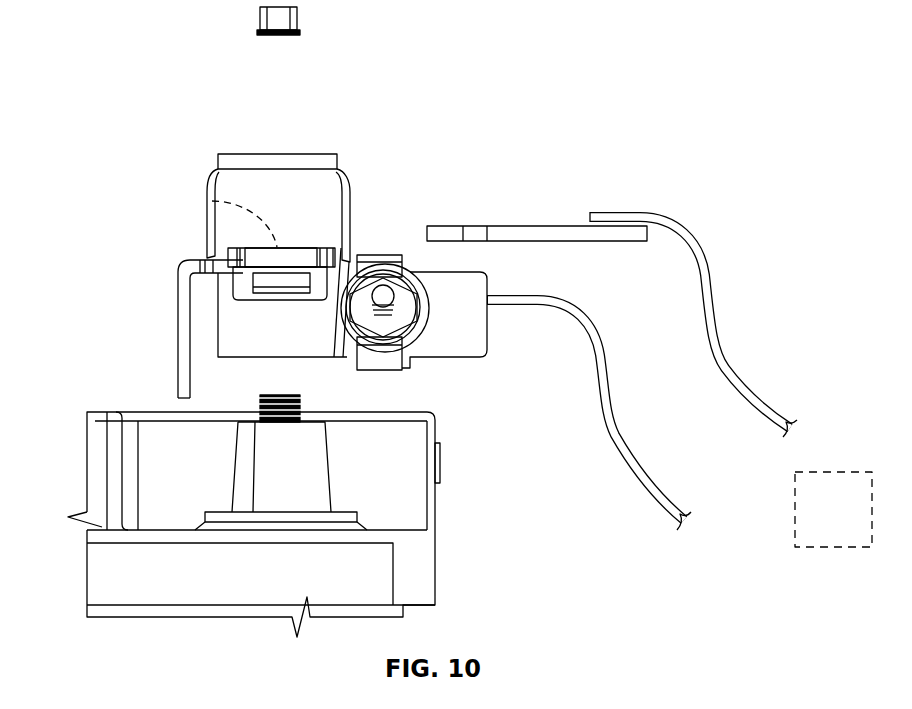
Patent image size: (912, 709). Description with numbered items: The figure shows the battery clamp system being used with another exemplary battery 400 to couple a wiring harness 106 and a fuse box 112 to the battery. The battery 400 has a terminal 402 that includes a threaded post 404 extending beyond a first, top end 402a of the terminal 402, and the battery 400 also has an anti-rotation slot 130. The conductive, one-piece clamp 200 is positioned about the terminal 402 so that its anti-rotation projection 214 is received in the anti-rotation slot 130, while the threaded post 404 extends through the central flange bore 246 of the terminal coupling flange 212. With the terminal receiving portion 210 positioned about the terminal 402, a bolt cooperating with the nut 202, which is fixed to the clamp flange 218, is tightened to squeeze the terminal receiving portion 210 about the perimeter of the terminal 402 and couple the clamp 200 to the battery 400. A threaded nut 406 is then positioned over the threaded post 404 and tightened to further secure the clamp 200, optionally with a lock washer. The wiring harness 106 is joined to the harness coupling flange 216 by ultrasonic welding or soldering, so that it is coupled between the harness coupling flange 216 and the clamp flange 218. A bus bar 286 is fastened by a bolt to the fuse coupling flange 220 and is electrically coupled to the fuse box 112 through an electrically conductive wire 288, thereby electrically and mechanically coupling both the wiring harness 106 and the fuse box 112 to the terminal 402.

The threaded nut 406 is at (299, 17).
The fuse coupling flange 220 is at (332, 144).
The clamp 200 is at (351, 140).
The central flange bore 246 is at (212, 200).
The terminal coupling flange 212 is at (218, 251).
The anti-rotation projection 214 is at (173, 300).
The terminal receiving portion 210 is at (213, 336).
The threaded post 404 is at (272, 393).
The nut 202 is at (414, 288).
The bus bar 286 is at (530, 226).
The clamp flange 218 is at (437, 314).
The harness coupling flange 216 is at (498, 343).
The electrically conductive wire 288 is at (729, 366).
The wiring harness 106 is at (633, 464).
The fuse box 112 is at (792, 434).
The battery 400 is at (457, 495).
The top end of the terminal 402a is at (240, 422).
The terminal 402 is at (341, 494).
The anti-rotation slot 130 is at (183, 545).